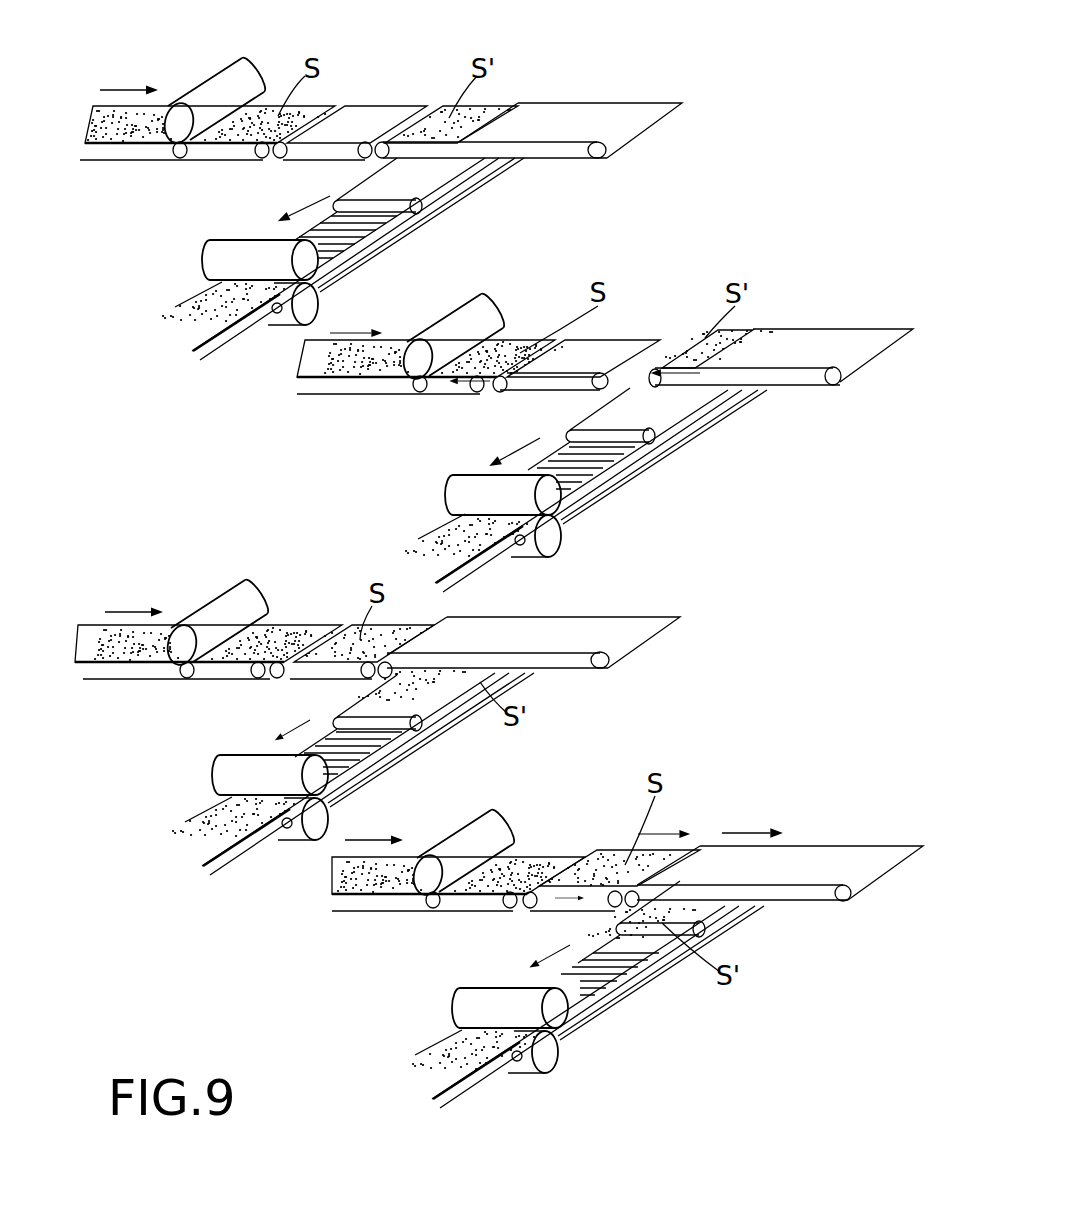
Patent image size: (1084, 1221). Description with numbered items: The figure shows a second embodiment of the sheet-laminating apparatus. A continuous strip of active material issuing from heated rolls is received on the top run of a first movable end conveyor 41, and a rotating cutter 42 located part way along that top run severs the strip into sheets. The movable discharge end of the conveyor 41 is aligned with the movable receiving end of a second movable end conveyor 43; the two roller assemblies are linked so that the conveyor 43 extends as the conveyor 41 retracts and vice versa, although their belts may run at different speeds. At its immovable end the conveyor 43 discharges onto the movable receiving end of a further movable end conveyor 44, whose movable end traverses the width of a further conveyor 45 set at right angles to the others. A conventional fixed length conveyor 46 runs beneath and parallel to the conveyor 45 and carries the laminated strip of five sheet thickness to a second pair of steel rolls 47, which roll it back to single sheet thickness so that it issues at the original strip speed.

The first movable end conveyor 41 is at (388, 912).
The rotating cutter 42 is at (485, 838).
The second movable end conveyor 43 is at (583, 900).
The further movable end conveyor 44 is at (780, 846).
The further movable end conveyor 45 is at (723, 908).
The fixed length conveyor 46 is at (633, 977).
The second pair of steel rolls 47 is at (455, 1010).